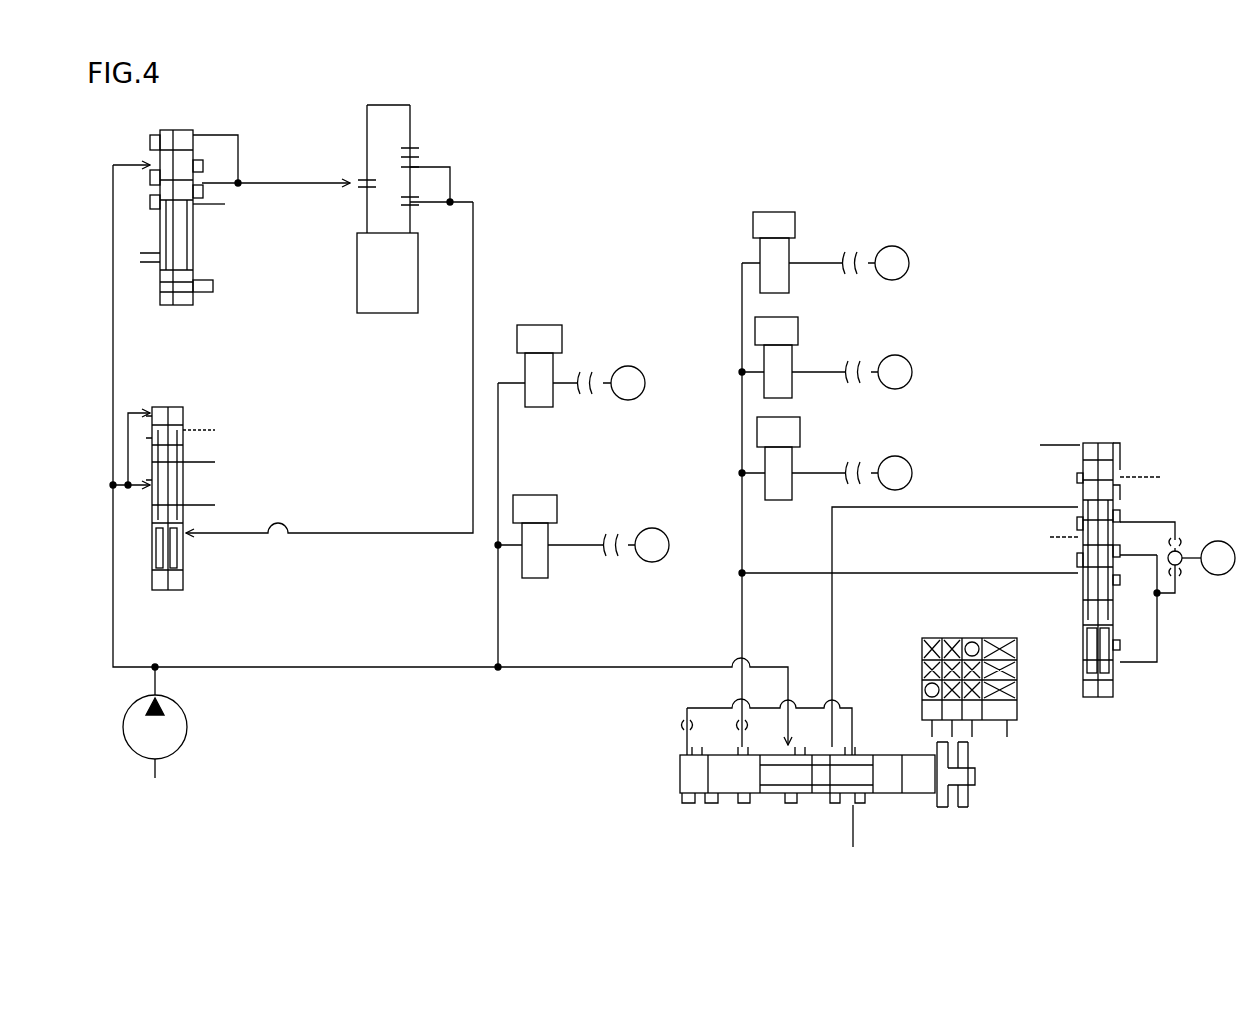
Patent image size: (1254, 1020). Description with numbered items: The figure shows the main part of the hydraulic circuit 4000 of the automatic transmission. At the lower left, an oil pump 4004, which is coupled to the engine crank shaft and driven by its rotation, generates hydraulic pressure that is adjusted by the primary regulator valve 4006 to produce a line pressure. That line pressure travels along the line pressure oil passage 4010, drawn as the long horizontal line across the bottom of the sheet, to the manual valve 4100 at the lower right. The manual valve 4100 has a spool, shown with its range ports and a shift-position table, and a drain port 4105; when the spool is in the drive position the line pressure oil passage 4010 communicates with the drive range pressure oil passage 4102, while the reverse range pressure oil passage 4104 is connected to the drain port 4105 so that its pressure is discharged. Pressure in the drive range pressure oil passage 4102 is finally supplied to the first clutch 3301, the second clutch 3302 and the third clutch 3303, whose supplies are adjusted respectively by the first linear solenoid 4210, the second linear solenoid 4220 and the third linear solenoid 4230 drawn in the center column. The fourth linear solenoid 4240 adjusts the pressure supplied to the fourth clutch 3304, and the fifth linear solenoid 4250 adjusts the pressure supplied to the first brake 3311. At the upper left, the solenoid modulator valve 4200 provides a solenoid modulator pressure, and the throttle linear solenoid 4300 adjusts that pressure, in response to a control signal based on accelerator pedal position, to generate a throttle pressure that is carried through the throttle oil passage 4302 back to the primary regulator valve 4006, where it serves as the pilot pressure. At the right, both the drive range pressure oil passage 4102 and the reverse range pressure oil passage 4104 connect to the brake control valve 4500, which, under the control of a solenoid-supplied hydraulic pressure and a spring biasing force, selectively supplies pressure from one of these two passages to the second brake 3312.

The hydraulic circuit 4000 is at (715, 140).
The oil pump 4004 is at (187, 718).
The primary regulator valve 4006 is at (163, 595).
The line pressure oil passage 4010 is at (190, 665).
The manual valve 4100 is at (668, 782).
The D range pressure oil passage 4102 is at (963, 572).
The R range pressure oil passage 4104 is at (963, 505).
The drain port 4105 is at (860, 810).
The solenoid modulator valve 4200 is at (173, 318).
The SL1 linear solenoid 4210 is at (795, 228).
The SL2 linear solenoid 4220 is at (798, 338).
The SL3 linear solenoid 4230 is at (800, 440).
The SL4 linear solenoid 4240 is at (533, 325).
The SL5 linear solenoid 4250 is at (557, 510).
The SLT linear solenoid 4300 is at (357, 257).
The SLT oil passage 4302 is at (425, 535).
The B2 control valve 4500 is at (1134, 450).
The C1 clutch 3301 is at (887, 245).
The C2 clutch 3302 is at (893, 355).
The C3 clutch 3303 is at (893, 456).
The C4 clutch 3304 is at (622, 364).
The B1 brake 3311 is at (648, 527).
The B2 brake 3312 is at (1215, 578).